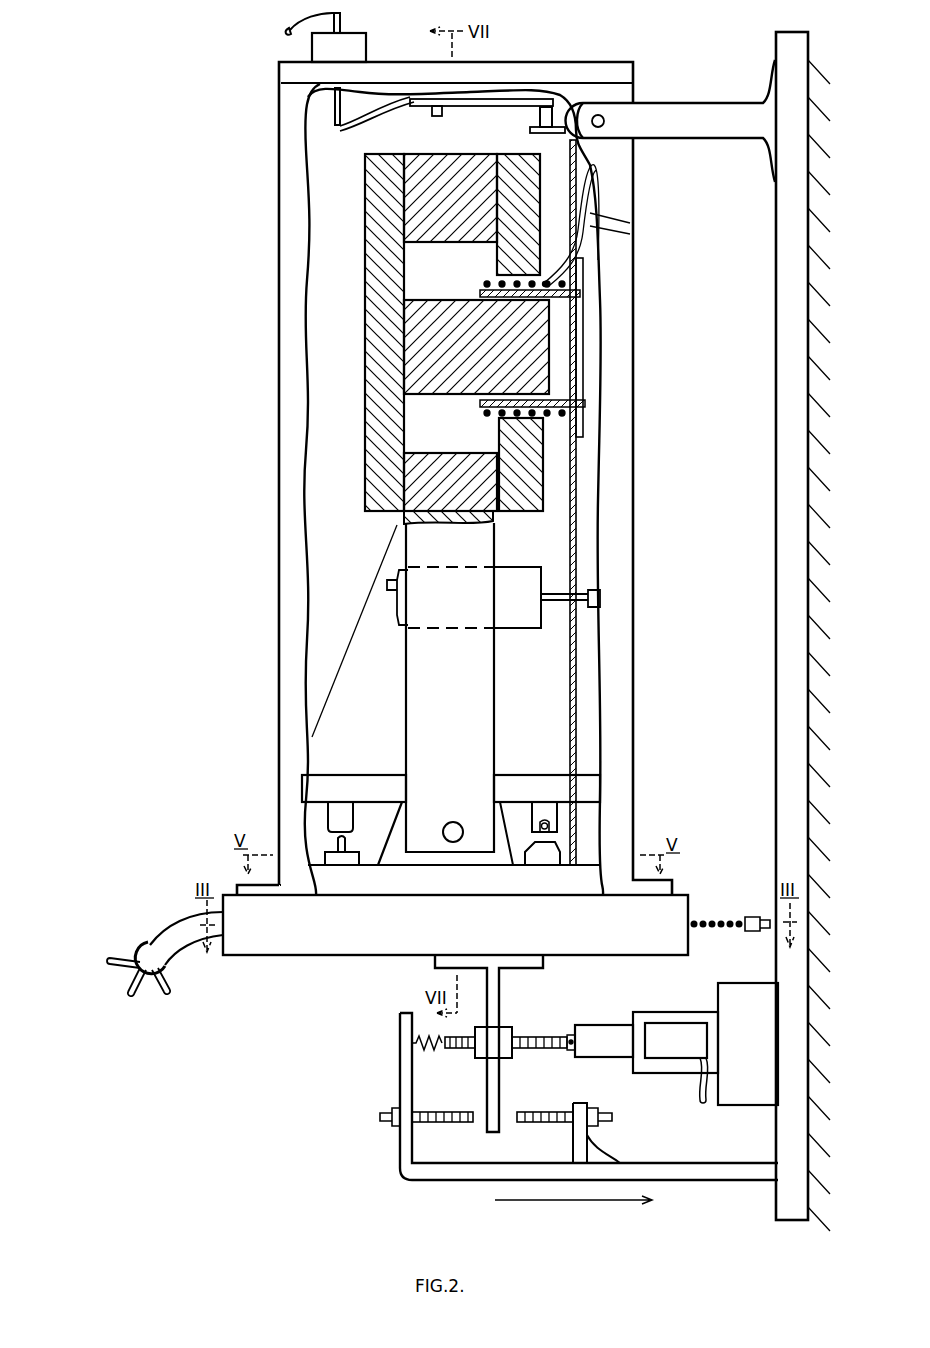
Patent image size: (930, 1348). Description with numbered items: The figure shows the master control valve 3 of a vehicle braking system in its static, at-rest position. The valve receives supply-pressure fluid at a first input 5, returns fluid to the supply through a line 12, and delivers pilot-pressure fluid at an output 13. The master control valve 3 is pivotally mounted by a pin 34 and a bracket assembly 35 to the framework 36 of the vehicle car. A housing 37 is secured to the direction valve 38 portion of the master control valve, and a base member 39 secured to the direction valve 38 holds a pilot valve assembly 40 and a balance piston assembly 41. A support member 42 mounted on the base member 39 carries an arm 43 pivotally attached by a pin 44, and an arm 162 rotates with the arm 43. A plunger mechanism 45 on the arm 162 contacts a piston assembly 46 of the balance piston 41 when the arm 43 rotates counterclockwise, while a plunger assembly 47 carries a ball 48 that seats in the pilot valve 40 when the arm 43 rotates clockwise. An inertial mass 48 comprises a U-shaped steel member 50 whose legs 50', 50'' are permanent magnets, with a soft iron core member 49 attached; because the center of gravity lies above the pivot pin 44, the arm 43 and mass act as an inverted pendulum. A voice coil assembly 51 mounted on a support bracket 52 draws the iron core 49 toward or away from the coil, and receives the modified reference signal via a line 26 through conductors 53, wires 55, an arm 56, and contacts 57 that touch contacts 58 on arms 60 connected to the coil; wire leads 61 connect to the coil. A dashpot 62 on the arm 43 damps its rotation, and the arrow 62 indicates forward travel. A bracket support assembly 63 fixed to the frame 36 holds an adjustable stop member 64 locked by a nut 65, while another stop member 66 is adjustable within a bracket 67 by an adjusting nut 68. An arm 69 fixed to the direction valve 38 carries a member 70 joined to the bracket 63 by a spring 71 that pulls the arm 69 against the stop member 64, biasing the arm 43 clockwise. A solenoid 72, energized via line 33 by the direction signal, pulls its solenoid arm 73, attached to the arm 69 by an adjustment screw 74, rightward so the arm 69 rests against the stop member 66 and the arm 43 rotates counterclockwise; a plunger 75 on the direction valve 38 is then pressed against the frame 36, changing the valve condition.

The master control valve 3 is at (265, 449).
The first input 5 is at (160, 986).
The line 12 is at (122, 952).
The output 13 is at (128, 980).
The line 26 is at (298, 36).
The line 33 is at (697, 1086).
The pin 34 is at (603, 128).
The bracket assembly 35 is at (714, 130).
The framework 36 is at (776, 246).
The housing 37 is at (620, 486).
The direction valve 38 is at (320, 940).
The base member 39 is at (583, 870).
The pilot valve assembly 40 is at (580, 812).
The balance piston assembly 41 is at (322, 838).
The support member 42 is at (390, 826).
The arm 43 is at (406, 712).
The pin 44 is at (456, 842).
The plunger mechanism 45 is at (332, 815).
The piston assembly 46 is at (348, 842).
The plunger assembly 47 is at (558, 806).
The inertial mass 48 is at (352, 272).
The soft iron core member 49 is at (439, 303).
The U-shaped steel member 50 is at (410, 332).
The leg 50' is at (472, 198).
The leg 50'' is at (421, 529).
The voice coil assembly 51 is at (485, 280).
The support bracket 52 is at (583, 278).
The conductors 53 is at (338, 124).
The wires 55 is at (380, 108).
The arm 56 is at (508, 106).
The contacts 57 is at (366, 46).
The contacts 58 is at (560, 118).
The arms 60 is at (548, 134).
The leads 61 is at (601, 226).
The dashpot 62 is at (530, 610).
The bracket support assembly 63 is at (400, 1145).
The stop member 64 is at (445, 1112).
The nut 65 is at (392, 1110).
The stop member 66 is at (555, 1110).
The bracket 67 is at (590, 1135).
The adjusting nut 68 is at (592, 1106).
The arm 69 is at (499, 995).
The member 70 is at (458, 1050).
The spring 71 is at (432, 1047).
The solenoid 72 is at (670, 1012).
The solenoid arm 73 is at (600, 1030).
The adjustment screw 74 is at (548, 1052).
The plunger 75 is at (762, 916).
The arm 162 is at (368, 780).